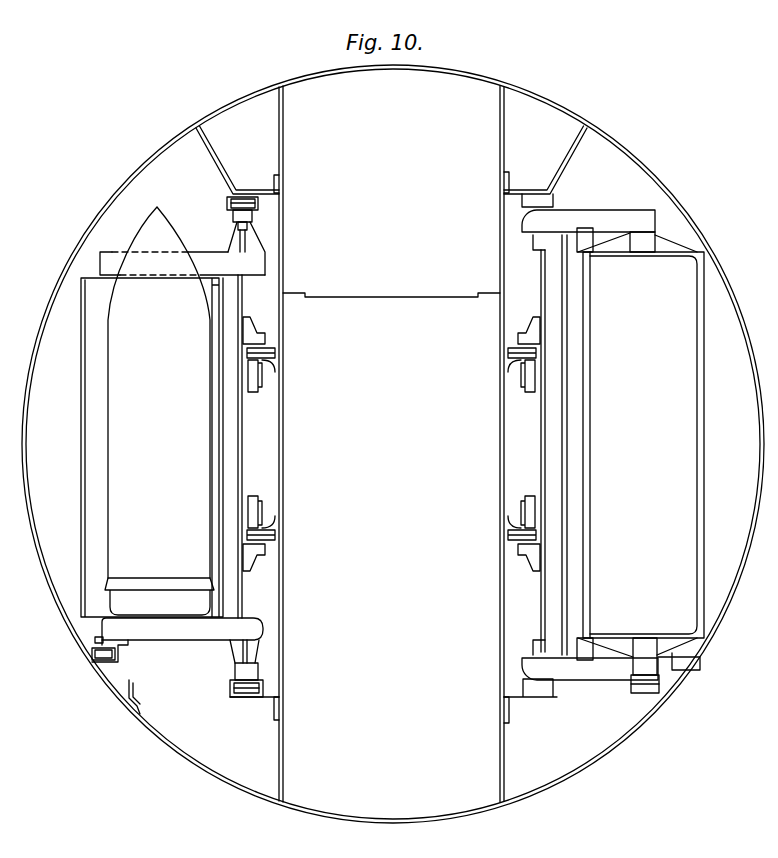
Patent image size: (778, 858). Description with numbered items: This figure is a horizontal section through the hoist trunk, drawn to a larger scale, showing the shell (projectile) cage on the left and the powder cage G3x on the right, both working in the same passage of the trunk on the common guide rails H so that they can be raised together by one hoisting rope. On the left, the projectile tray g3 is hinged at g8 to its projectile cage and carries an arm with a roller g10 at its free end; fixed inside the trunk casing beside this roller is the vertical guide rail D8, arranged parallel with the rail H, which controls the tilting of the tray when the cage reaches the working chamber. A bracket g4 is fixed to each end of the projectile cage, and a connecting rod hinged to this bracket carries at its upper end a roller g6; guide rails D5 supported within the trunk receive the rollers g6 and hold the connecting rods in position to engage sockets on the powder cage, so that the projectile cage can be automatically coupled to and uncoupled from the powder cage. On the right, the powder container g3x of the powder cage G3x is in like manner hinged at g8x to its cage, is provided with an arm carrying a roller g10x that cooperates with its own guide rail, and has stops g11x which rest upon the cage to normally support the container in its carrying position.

The projectile tray g3 is at (85, 408).
The bracket g4 is at (256, 242).
The roller g6 is at (242, 197).
The hinge g8 is at (111, 253).
The roller g10 is at (99, 645).
The guide rail D5 is at (228, 200).
The guide rail D8 is at (116, 661).
The guide rails H is at (277, 371).
The stops g11x is at (589, 230).
The powder cage G3x is at (640, 222).
The hinge g8x is at (646, 240).
The powder container g3x is at (682, 258).
The roller g10x is at (639, 695).